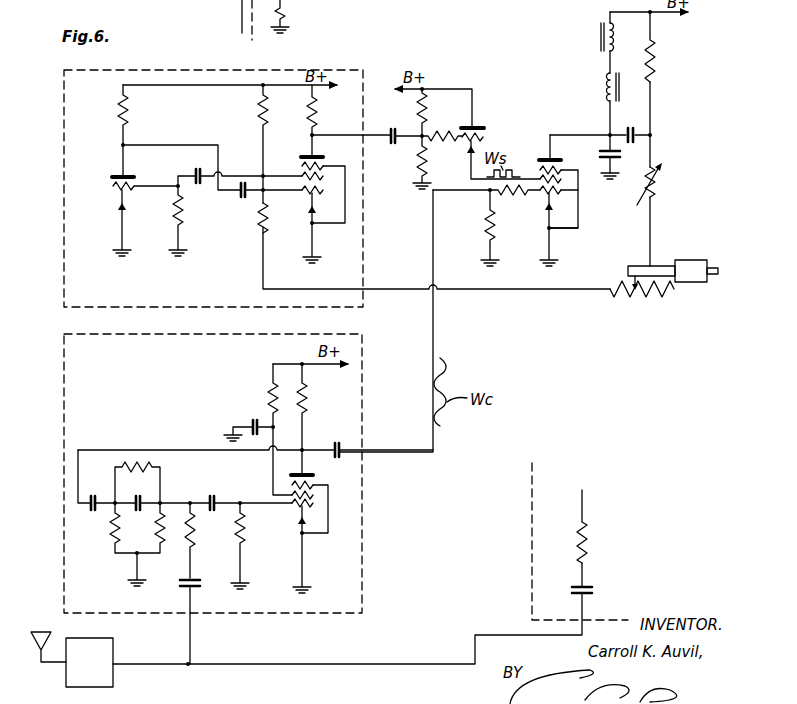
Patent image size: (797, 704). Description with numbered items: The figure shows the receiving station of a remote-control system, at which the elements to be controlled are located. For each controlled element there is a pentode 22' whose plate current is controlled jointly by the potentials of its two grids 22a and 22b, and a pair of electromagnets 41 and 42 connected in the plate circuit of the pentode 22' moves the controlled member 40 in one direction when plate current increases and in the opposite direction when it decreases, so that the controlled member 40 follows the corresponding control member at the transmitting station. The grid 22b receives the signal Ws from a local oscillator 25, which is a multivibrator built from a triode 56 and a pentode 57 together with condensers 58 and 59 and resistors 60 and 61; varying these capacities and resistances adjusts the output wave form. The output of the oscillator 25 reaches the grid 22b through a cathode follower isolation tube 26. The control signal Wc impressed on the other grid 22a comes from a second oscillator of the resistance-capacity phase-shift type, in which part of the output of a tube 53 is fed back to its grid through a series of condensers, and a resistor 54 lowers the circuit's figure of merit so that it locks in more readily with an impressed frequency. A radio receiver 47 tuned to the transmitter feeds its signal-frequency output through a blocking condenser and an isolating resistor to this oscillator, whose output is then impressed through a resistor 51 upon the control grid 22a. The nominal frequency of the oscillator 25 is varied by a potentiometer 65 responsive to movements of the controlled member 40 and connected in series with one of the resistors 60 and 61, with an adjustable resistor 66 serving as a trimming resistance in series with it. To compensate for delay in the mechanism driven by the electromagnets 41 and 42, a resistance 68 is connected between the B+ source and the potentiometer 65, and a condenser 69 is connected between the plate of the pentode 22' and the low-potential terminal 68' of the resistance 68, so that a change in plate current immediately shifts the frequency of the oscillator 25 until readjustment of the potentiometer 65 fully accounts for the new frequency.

The local oscillator 25 is at (64, 168).
The triode 56 is at (115, 188).
The pentode 57 is at (300, 166).
The condenser 58 is at (196, 168).
The condenser 59 is at (241, 200).
The resistor 60 is at (183, 228).
The resistor 61 is at (266, 230).
The cathode follower isolation tube 26 is at (485, 130).
The grid 22b is at (540, 170).
The grid 22a is at (578, 190).
The pentode 22' is at (586, 235).
The resistor 51 is at (515, 200).
The electromagnet 41 is at (605, 25).
The electromagnet 42 is at (605, 88).
The resistance 68 is at (676, 47).
The low-potential terminal 68' is at (681, 137).
The condenser 69 is at (633, 127).
The adjustable resistor 66 is at (658, 195).
The controlled member 40 is at (660, 264).
The potentiometer 65 is at (641, 301).
The resistor 54 is at (140, 463).
The tube 53 is at (318, 532).
The radio receiver 47 is at (72, 659).